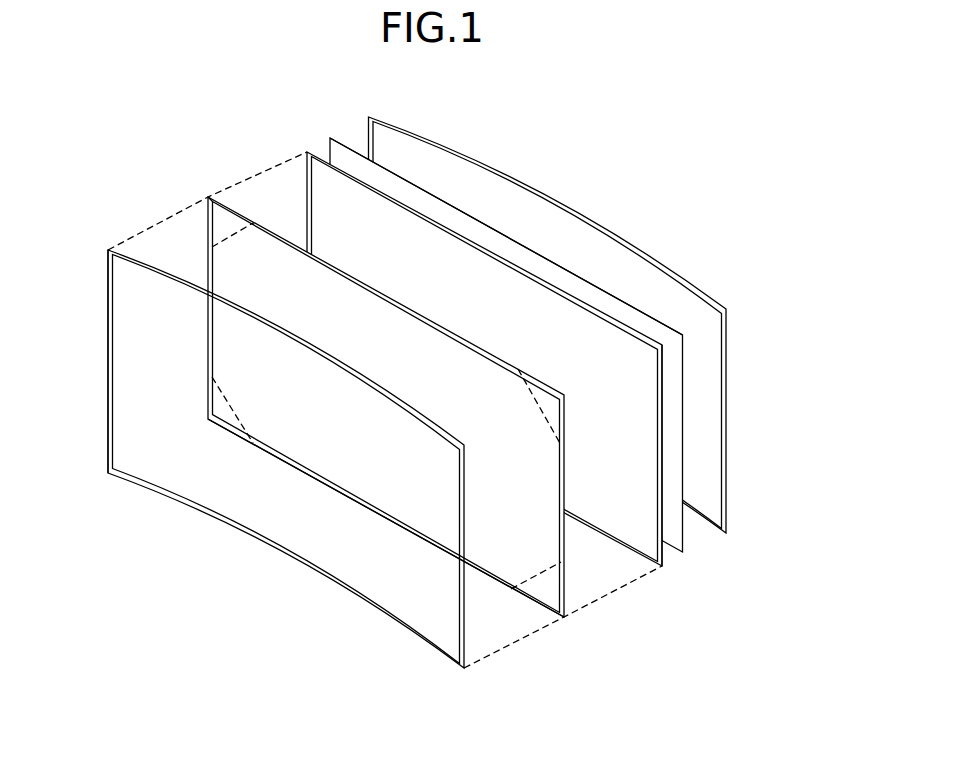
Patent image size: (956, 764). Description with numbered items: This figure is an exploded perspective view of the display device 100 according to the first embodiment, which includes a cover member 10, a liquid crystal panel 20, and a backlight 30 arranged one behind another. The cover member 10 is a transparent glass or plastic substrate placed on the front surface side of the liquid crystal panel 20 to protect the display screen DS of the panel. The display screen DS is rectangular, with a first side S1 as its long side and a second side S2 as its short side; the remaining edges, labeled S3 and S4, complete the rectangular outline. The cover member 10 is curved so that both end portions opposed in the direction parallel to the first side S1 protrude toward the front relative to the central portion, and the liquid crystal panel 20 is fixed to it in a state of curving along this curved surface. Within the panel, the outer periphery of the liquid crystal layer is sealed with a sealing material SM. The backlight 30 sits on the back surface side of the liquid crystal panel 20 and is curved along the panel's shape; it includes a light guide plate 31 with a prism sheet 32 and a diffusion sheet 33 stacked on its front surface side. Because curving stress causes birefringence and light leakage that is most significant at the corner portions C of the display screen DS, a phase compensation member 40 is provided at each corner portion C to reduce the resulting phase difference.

The display device 100 is at (640, 147).
The cover member 10 is at (467, 638).
The liquid crystal panel 20 is at (570, 595).
The backlight 30 is at (580, 379).
The light guide plate 31 is at (732, 508).
The prism sheet 32 is at (675, 549).
The diffusion sheet 33 is at (508, 394).
The phase compensation member 40 is at (226, 232).
The corner portions C is at (203, 185).
The display screen DS is at (230, 262).
The sealing material SM is at (252, 233).
The first side S1 is at (378, 292).
The second side S2 is at (566, 478).
The third surface S3 is at (338, 493).
The fourth surface S4 is at (207, 320).